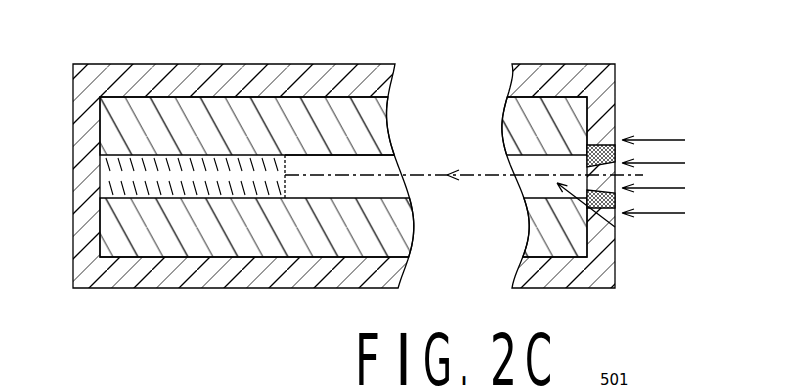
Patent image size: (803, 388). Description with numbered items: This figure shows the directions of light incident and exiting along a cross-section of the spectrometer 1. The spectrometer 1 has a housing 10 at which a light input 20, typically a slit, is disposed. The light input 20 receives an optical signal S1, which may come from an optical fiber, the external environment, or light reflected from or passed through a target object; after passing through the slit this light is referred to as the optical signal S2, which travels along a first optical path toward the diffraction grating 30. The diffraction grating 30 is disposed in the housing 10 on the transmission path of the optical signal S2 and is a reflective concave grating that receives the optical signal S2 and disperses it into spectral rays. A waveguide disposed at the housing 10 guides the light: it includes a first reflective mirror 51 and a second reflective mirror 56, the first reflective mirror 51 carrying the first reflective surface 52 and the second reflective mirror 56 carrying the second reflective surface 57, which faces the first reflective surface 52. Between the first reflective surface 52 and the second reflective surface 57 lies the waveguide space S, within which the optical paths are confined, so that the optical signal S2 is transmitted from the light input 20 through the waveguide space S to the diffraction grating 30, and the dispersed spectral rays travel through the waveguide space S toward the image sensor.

The spectrometer 1 is at (712, 57).
The housing 10 is at (140, 75).
The first reflective mirror 51 is at (255, 115).
The second reflective mirror 56 is at (255, 240).
The diffraction grating 30 is at (112, 172).
The second reflective surface 57 is at (332, 197).
The first reflective surface 52 is at (368, 155).
The light input 20 is at (603, 145).
The optical signal S1 is at (668, 140).
The optical signal S2 is at (427, 175).
The waveguide space S is at (615, 227).